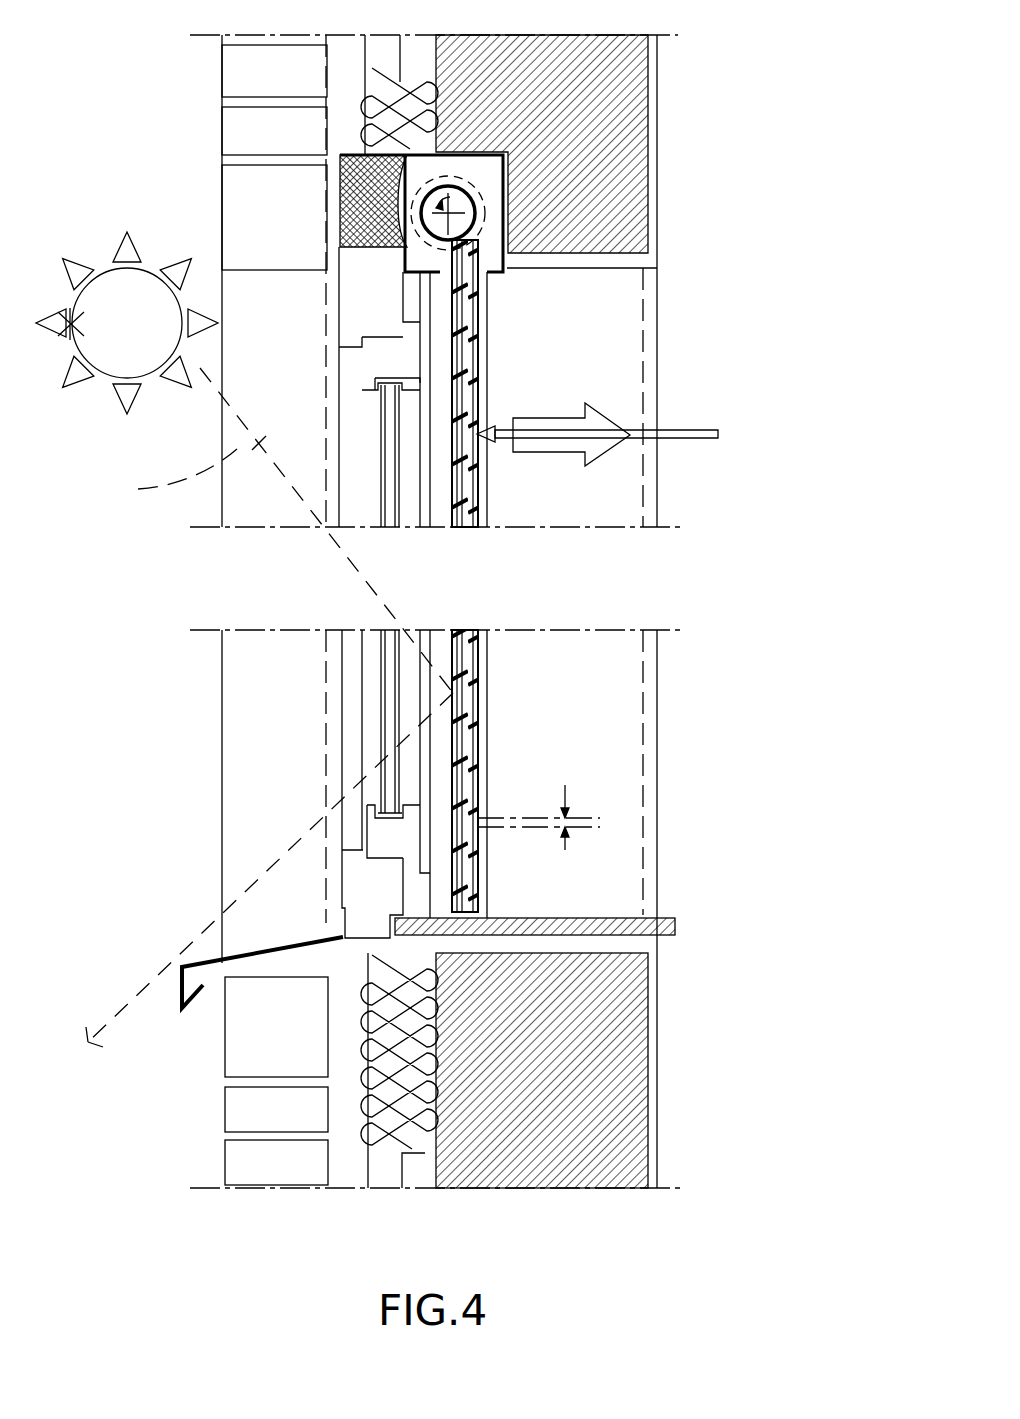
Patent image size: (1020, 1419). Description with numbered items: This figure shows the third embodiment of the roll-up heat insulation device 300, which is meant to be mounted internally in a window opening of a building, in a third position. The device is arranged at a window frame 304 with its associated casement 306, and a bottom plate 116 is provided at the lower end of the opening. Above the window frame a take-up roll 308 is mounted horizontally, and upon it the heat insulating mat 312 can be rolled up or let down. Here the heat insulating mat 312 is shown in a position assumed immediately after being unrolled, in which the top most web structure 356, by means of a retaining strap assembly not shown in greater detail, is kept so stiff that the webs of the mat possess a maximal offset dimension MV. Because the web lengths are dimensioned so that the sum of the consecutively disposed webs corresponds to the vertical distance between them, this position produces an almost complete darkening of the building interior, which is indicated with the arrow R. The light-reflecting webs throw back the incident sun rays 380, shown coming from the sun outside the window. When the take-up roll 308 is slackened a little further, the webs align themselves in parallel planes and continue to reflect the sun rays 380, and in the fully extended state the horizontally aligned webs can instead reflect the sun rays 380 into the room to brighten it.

The heat insulation device 300 is at (777, 22).
The window frame 304 is at (368, 896).
The casement 306 is at (398, 847).
The take-up roll 308 is at (468, 200).
The heat insulating mat 312 is at (483, 738).
The top most web structure 356 is at (413, 274).
The sun rays 380 is at (244, 639).
The bottom plate 116 is at (487, 922).
The arrow indicating darkening R is at (555, 420).
The maximal offset dimension MV is at (557, 817).